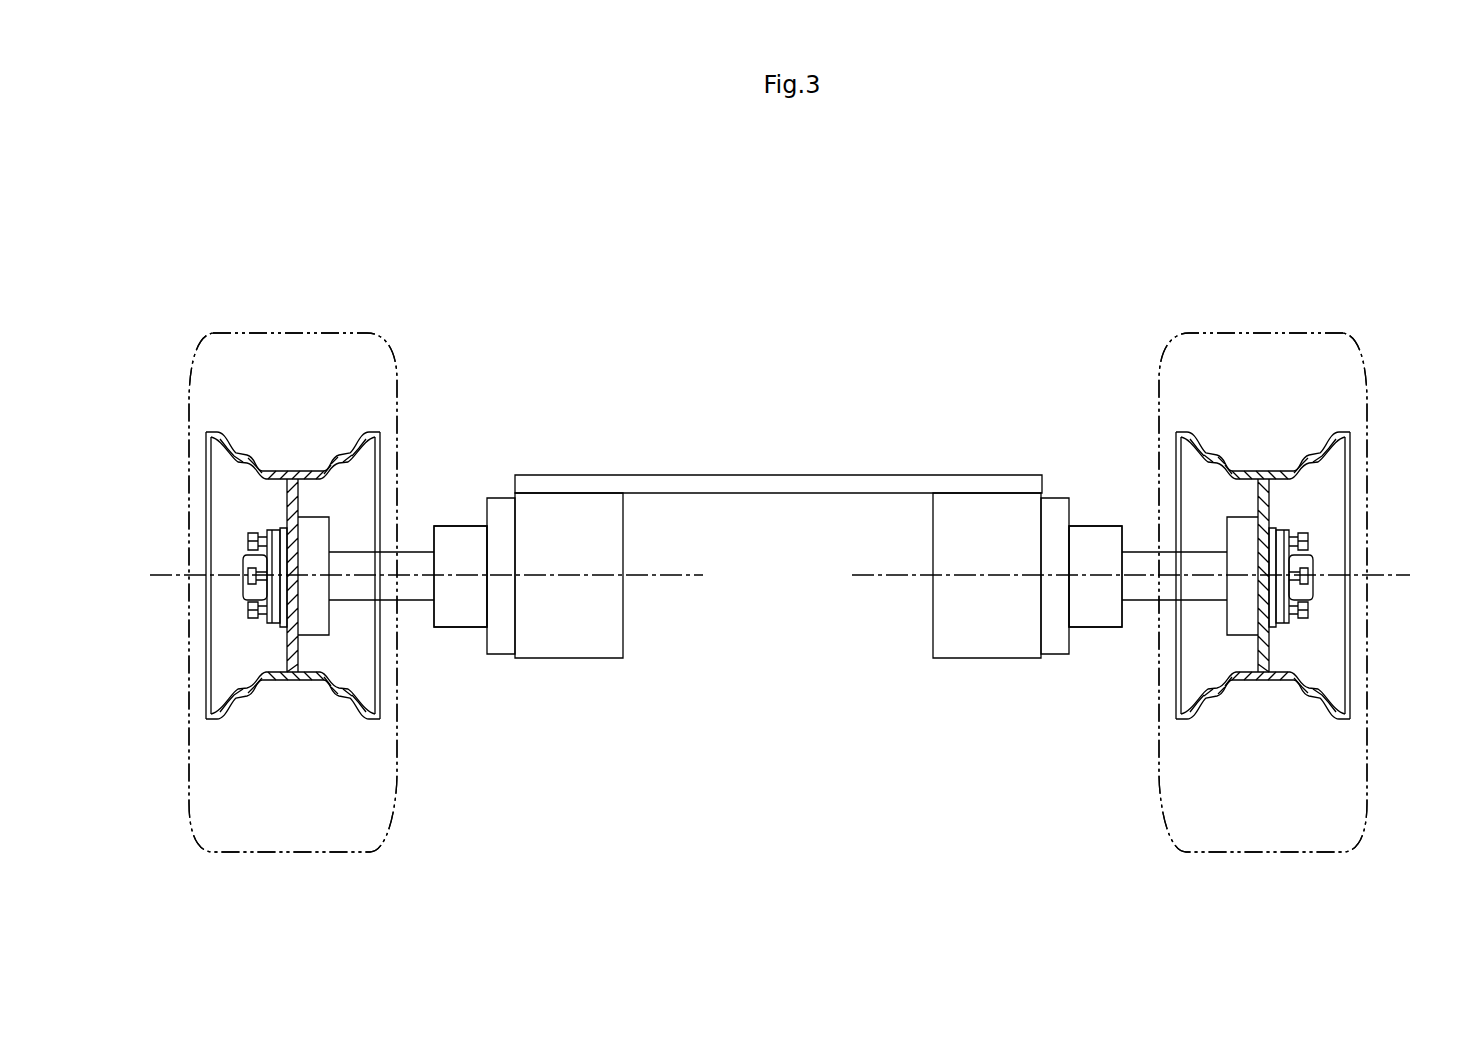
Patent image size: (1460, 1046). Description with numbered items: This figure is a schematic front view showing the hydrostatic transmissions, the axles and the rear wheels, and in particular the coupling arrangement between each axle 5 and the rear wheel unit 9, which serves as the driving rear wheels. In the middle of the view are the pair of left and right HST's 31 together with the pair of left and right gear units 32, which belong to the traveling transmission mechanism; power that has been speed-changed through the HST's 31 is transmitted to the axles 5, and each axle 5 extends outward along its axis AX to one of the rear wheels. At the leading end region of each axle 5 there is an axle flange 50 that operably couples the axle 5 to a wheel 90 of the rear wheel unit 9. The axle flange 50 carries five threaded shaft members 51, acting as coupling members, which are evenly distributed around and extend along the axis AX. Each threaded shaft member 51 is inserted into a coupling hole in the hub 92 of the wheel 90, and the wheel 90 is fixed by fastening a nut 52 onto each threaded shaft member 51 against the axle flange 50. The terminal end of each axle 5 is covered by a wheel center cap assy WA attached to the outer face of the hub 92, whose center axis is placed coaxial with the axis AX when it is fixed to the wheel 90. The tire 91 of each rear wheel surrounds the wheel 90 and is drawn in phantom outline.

The rear wheel unit 9 is at (1323, 284).
The tire 91 is at (200, 356).
The wheel 90 is at (233, 448).
The hub 92 is at (284, 536).
The axle flange 50 is at (318, 530).
The threaded shaft member 51 is at (252, 608).
The nut 52 is at (262, 617).
The wheel center cap assy WA is at (235, 550).
The axle 5 is at (446, 481).
The HST 31 is at (592, 651).
The gear unit 32 is at (466, 621).
The axis of the axle AX is at (780, 576).